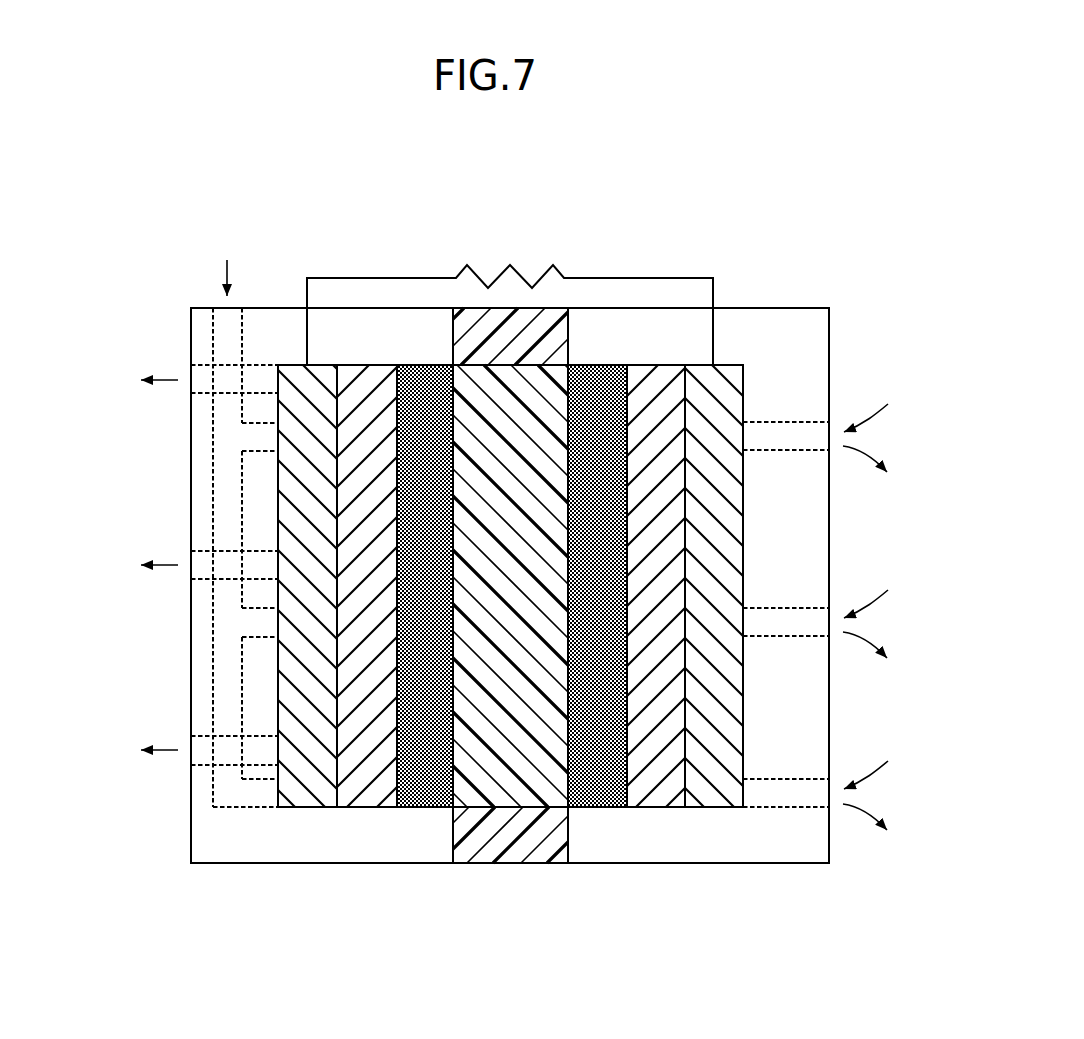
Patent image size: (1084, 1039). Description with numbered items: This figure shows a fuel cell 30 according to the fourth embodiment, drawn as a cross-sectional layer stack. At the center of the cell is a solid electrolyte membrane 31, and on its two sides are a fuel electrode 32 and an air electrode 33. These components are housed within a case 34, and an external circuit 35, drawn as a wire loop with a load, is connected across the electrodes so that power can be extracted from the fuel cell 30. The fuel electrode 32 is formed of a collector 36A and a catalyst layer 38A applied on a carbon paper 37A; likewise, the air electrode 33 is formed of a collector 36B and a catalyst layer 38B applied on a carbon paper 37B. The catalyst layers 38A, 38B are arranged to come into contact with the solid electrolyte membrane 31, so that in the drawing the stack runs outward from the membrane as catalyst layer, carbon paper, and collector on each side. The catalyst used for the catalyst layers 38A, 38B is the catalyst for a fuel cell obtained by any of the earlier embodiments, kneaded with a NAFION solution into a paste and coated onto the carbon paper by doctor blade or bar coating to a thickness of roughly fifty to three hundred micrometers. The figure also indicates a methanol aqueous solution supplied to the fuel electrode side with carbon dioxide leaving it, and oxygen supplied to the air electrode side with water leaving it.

The fuel cell 30 is at (130, 194).
The solid electrolyte membrane 31 is at (520, 863).
The fuel electrode 32 is at (275, 949).
The air electrode 33 is at (570, 949).
The case 34 is at (757, 323).
The external circuit 35 is at (594, 260).
The collector 36A is at (308, 807).
The carbon paper 37A is at (367, 807).
The catalyst layer 38A is at (426, 807).
The collector 36B is at (720, 807).
The carbon paper 37B is at (660, 807).
The catalyst layer 38B is at (603, 807).